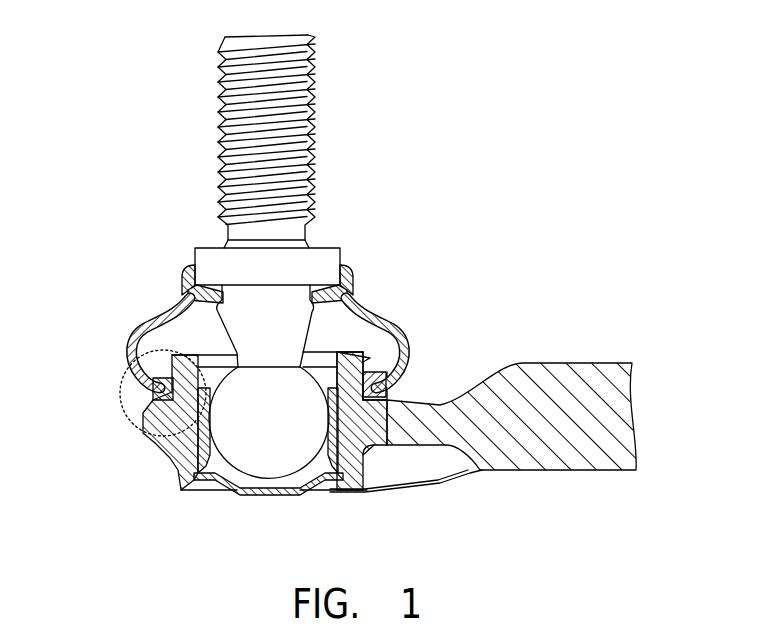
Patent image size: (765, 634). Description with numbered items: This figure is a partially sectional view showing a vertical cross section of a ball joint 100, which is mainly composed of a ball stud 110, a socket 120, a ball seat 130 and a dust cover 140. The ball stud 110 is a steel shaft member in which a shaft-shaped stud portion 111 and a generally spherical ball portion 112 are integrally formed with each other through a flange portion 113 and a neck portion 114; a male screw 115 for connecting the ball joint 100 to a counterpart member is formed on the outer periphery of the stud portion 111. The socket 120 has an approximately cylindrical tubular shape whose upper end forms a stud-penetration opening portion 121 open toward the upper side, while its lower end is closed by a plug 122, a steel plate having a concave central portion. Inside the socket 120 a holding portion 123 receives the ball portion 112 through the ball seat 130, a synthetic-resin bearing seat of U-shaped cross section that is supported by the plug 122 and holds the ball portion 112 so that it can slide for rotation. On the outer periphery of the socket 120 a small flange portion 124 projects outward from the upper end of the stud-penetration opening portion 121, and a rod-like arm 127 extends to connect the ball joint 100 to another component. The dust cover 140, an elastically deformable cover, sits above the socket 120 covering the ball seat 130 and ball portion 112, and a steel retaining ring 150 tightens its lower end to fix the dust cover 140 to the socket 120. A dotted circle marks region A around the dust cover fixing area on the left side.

The ball joint 100 is at (124, 46).
The ball stud 110 is at (208, 246).
The stud portion 111 is at (306, 236).
The ball portion 112 is at (283, 497).
The flange portion 113 is at (342, 261).
The neck portion 114 is at (333, 316).
The male screw 115 is at (313, 98).
The socket 120 is at (178, 488).
The stud-penetration opening portion 121 is at (403, 327).
The plug 122 is at (243, 498).
The holding portion 123 is at (207, 418).
The small flange portion 124 is at (401, 349).
The arm 127 is at (576, 471).
The ball seat 130 is at (371, 492).
The dust cover 140 is at (126, 331).
The retaining ring 150 is at (387, 380).
The region A is at (121, 393).